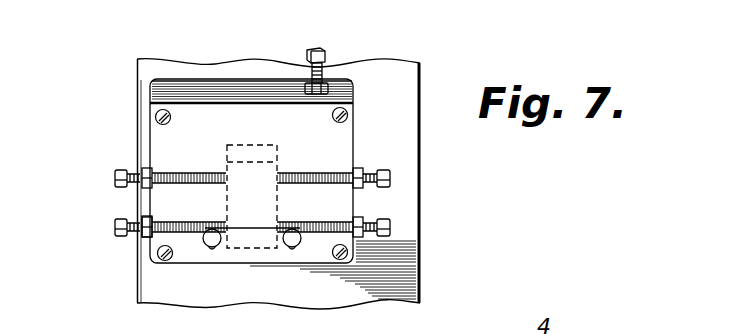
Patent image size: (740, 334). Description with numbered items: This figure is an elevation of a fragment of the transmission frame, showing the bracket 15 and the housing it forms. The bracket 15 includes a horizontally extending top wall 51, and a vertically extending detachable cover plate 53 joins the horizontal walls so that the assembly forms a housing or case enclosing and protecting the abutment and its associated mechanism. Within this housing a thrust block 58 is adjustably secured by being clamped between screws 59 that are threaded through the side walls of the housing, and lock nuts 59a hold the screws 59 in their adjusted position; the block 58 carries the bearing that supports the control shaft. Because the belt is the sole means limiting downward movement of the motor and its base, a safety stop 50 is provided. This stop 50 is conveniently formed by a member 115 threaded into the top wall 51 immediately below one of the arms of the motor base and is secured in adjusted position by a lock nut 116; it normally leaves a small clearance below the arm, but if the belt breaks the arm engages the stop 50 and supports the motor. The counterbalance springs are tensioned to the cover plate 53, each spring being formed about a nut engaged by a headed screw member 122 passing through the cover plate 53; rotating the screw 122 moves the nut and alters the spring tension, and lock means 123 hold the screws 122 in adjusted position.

The bracket 15 is at (422, 98).
The safety stop 50 is at (334, 45).
The top wall 51 is at (219, 90).
The cover plate 53 is at (340, 148).
The thrust block 58 is at (278, 158).
The screws 59 is at (128, 170).
The lock nuts 59a is at (145, 238).
The threaded member 115 is at (325, 72).
The lock nut 116 is at (332, 90).
The headed screw member 122 is at (287, 250).
The lock means 123 is at (252, 223).